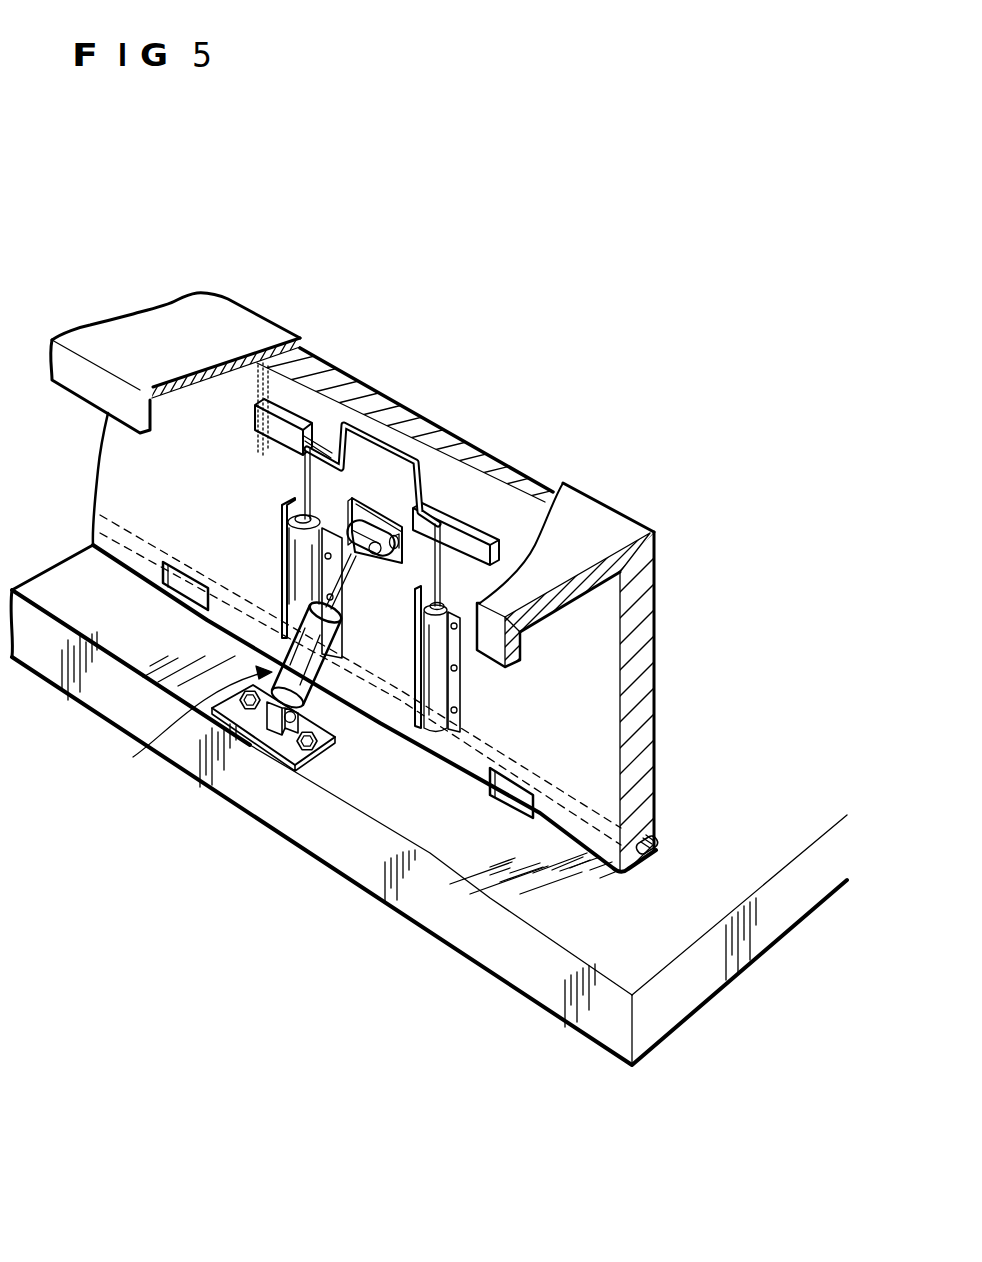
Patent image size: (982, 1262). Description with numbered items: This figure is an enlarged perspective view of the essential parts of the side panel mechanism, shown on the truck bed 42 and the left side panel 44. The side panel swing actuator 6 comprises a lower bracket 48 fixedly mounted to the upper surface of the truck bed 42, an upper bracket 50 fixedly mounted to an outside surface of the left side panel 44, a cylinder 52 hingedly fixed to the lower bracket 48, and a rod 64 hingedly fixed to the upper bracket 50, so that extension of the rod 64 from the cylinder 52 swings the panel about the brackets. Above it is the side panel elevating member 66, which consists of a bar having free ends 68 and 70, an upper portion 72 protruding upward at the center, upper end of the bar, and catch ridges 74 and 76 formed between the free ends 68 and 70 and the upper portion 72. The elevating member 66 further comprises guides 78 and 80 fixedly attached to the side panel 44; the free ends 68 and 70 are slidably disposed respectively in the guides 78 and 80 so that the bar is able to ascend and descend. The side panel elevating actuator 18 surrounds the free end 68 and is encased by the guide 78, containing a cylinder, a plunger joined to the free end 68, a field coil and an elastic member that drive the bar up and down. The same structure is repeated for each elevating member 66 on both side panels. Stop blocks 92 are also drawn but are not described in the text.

The side panel swing actuator 6 is at (193, 718).
The side panel elevating actuator 18 is at (303, 452).
The truck bed 42 is at (703, 778).
The left side panel 44 is at (227, 298).
The lower bracket 48 is at (267, 730).
The upper bracket 50 is at (362, 515).
The cylinder 52 is at (318, 690).
The rod 64 is at (333, 512).
The side panel elevating member 66 is at (395, 535).
The free end 68 is at (318, 512).
The free end 70 is at (490, 590).
The upper portion 72 is at (421, 497).
The catch ridge 74 is at (345, 496).
The catch ridge 76 is at (434, 520).
The guide 78 is at (280, 506).
The guide 80 is at (462, 682).
The stop block 92 is at (265, 402).